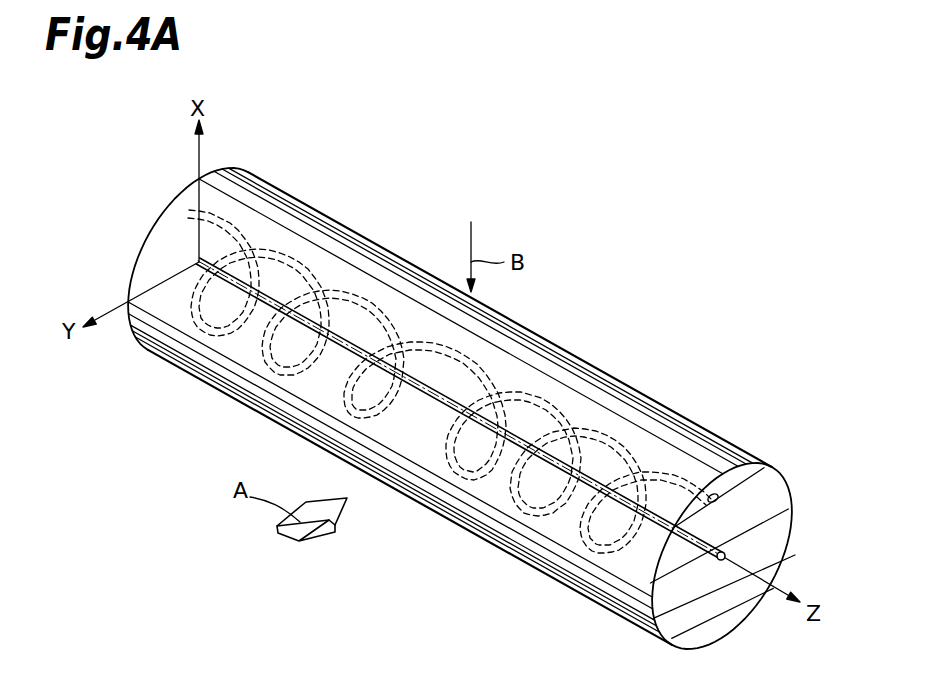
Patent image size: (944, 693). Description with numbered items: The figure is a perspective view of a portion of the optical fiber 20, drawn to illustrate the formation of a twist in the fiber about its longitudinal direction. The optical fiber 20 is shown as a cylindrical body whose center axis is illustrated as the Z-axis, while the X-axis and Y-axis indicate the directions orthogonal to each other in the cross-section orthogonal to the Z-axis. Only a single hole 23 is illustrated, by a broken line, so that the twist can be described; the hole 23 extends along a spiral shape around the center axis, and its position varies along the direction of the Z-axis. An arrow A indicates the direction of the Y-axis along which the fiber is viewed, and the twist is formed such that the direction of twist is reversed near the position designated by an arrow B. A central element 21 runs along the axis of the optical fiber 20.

The optical fiber 20 is at (579, 354).
The central rod 21 is at (224, 270).
The hole 23 is at (297, 250).